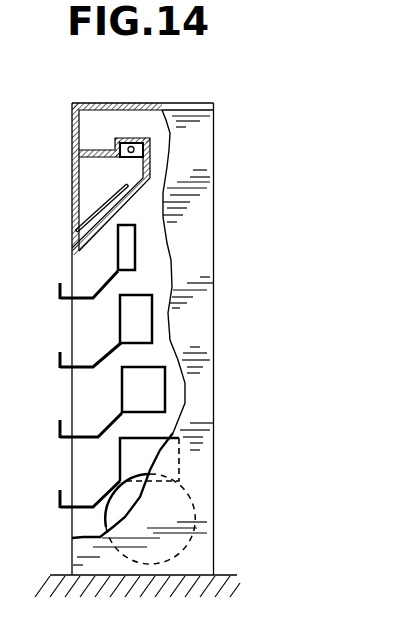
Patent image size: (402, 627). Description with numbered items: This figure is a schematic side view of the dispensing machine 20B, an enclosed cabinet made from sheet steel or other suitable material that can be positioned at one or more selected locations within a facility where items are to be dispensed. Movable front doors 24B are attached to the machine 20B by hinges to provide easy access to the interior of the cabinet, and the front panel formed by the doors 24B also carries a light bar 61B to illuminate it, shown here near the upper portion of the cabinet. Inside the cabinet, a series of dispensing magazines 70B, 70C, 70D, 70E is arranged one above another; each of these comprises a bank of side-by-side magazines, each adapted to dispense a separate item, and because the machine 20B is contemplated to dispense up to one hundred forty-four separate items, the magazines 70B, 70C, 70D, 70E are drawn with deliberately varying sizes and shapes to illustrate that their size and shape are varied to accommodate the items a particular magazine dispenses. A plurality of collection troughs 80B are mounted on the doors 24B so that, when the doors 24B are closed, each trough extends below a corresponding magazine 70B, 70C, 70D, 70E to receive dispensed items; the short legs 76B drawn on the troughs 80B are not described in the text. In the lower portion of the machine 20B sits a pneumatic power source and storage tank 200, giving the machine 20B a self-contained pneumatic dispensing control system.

The machine 20B is at (186, 94).
The light bar 61B is at (137, 143).
The front doors 24B is at (98, 218).
The collection troughs 80B is at (82, 287).
The mounting leg 76B is at (30, 395).
The dispensing magazine 70B is at (128, 240).
The dispensing magazine 70C is at (140, 317).
The dispensing magazine 70D is at (157, 388).
The dispensing magazine 70E is at (143, 453).
The pneumatic power source and storage tank 200 is at (133, 497).